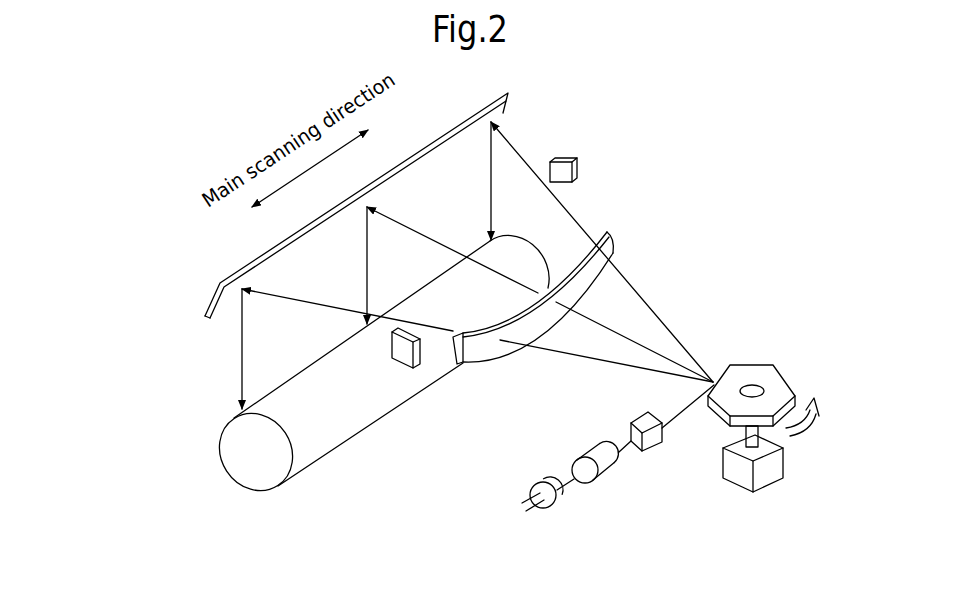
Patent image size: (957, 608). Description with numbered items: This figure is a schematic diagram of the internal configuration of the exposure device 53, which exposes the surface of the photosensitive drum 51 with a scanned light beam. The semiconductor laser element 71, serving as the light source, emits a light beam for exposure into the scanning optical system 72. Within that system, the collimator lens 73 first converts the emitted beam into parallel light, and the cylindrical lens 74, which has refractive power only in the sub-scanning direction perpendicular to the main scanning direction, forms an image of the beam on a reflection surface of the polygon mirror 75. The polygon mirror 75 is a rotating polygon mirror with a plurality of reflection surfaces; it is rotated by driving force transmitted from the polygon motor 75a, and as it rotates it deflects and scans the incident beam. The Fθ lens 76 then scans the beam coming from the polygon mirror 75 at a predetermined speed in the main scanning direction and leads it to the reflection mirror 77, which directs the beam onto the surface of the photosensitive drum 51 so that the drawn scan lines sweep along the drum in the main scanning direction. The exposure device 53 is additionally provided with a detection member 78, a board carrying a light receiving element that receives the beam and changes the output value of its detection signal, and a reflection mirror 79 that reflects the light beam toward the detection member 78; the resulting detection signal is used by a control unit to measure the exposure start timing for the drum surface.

The photosensitive drum 51 is at (255, 487).
The exposure device 53 is at (733, 270).
The semiconductor laser element 71 is at (546, 508).
The scanning optical system 72 is at (478, 306).
The collimator lens 73 is at (584, 471).
The cylindrical lens 74 is at (639, 447).
The polygon mirror 75 is at (754, 372).
The polygon motor 75a is at (733, 481).
The Fθ lens 76 is at (613, 245).
The reflection mirror 77 is at (511, 107).
The detection member 78 is at (404, 356).
The reflection mirror 79 is at (579, 170).